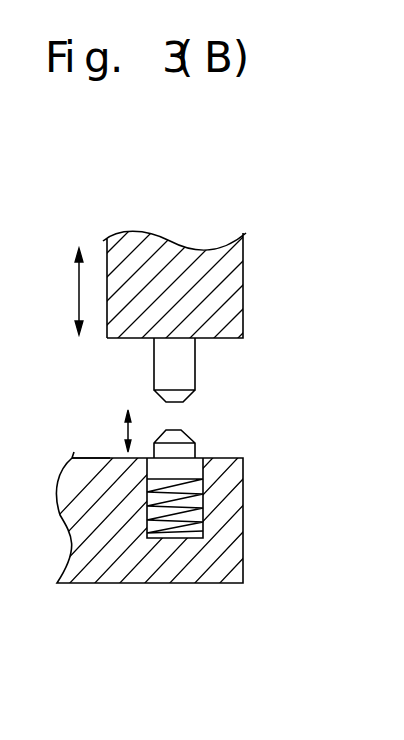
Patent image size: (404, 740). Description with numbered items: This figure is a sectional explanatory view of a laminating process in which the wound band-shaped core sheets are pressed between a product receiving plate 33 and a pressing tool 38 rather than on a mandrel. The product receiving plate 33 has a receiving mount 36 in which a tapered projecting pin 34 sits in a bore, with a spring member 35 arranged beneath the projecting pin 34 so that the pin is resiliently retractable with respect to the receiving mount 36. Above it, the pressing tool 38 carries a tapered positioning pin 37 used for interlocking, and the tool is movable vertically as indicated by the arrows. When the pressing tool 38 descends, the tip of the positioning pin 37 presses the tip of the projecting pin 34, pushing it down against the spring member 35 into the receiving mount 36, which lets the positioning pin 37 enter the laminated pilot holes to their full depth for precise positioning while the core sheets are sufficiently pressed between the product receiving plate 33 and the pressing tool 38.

The product receiving plate 33 is at (263, 457).
The projecting pin 34 is at (178, 440).
The spring member 35 is at (185, 501).
The receiving mount 36 is at (87, 472).
The positioning pin 37 is at (182, 360).
The pressing tool 38 is at (263, 237).